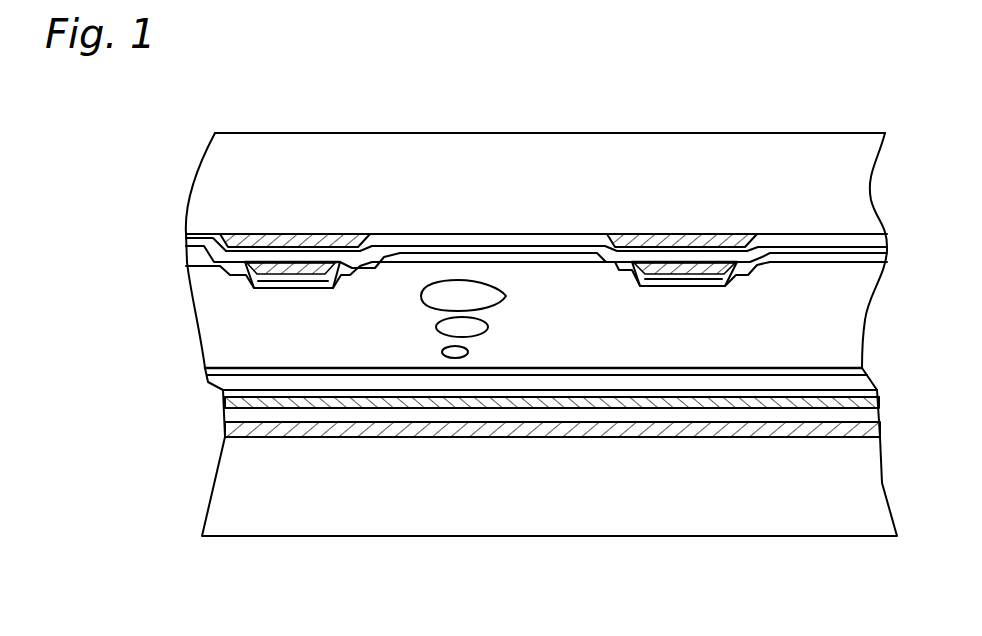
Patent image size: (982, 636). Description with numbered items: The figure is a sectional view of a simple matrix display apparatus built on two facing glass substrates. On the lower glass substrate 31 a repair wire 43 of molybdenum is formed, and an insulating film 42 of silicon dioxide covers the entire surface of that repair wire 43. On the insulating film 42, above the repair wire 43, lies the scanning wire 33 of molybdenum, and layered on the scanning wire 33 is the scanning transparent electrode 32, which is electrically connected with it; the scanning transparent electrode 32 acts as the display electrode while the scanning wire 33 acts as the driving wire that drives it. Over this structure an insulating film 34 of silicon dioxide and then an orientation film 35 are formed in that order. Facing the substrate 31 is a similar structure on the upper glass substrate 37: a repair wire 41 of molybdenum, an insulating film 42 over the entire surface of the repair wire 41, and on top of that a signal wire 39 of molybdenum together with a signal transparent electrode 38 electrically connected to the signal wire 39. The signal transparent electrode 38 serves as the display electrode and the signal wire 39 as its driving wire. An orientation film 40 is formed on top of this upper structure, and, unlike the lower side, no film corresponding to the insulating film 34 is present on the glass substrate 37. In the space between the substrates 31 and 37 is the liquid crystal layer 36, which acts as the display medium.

The glass substrate 31 is at (573, 485).
The scanning transparent electrode 32 is at (312, 400).
The scanning wire 33 is at (460, 398).
The insulating film 34 is at (243, 437).
The orientation film 35 is at (818, 378).
The liquid crystal layer 36 is at (433, 338).
The glass substrate 37 is at (667, 167).
The signal transparent electrode 38 is at (223, 232).
The signal wire 39 is at (338, 245).
The orientation film 40 is at (581, 248).
The repair wire 41 is at (317, 265).
The insulating film 42 is at (477, 232).
The repair wire 43 is at (733, 437).